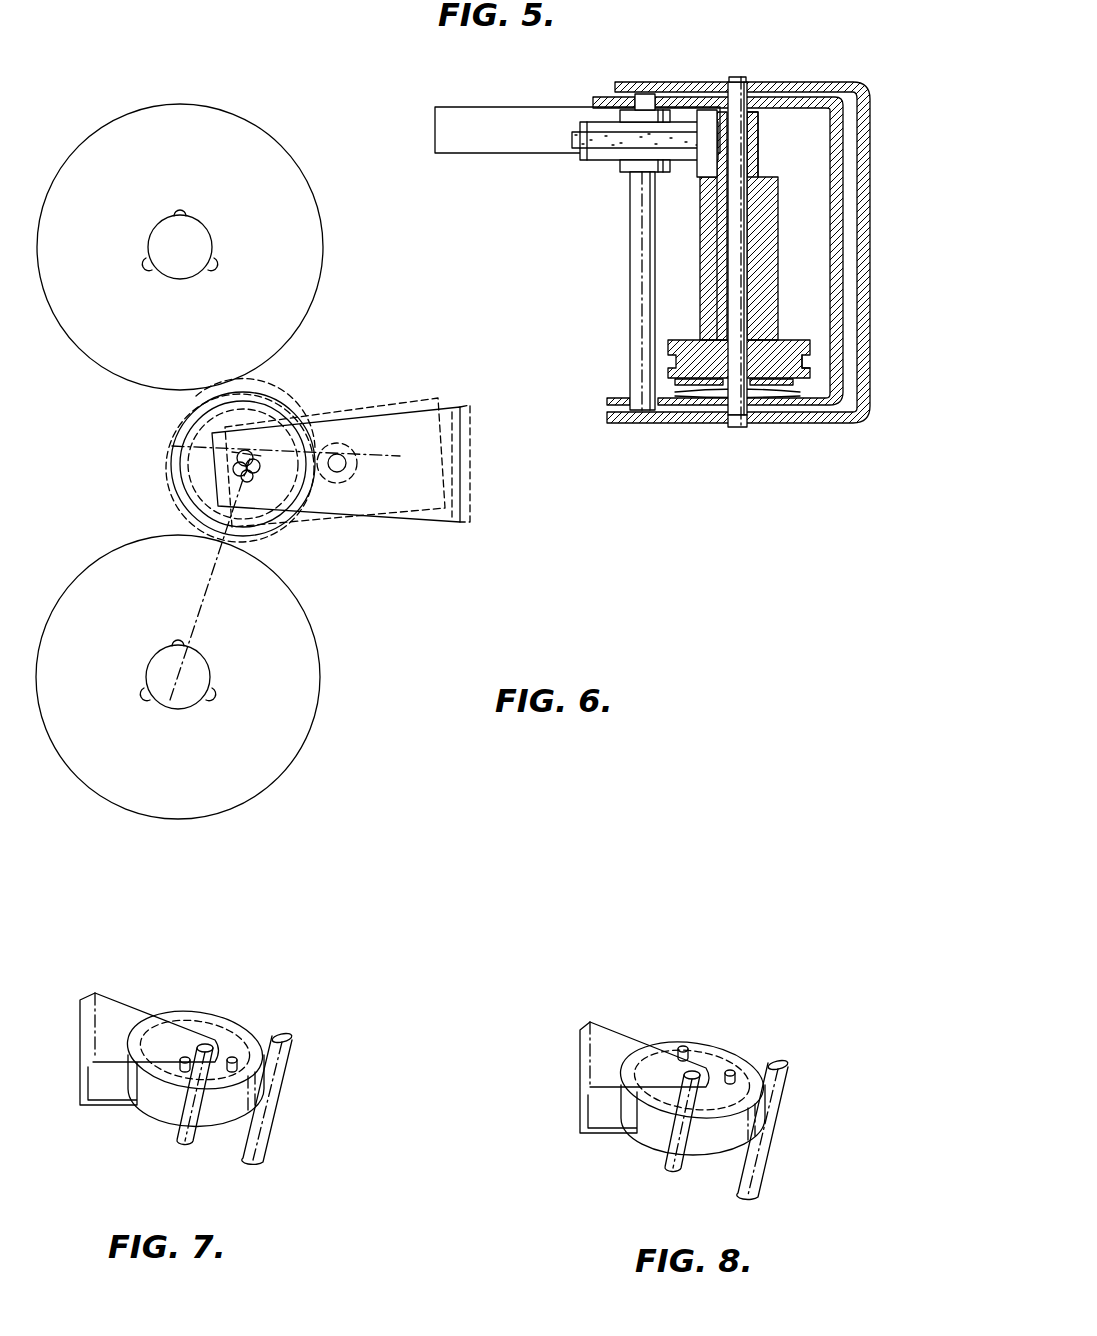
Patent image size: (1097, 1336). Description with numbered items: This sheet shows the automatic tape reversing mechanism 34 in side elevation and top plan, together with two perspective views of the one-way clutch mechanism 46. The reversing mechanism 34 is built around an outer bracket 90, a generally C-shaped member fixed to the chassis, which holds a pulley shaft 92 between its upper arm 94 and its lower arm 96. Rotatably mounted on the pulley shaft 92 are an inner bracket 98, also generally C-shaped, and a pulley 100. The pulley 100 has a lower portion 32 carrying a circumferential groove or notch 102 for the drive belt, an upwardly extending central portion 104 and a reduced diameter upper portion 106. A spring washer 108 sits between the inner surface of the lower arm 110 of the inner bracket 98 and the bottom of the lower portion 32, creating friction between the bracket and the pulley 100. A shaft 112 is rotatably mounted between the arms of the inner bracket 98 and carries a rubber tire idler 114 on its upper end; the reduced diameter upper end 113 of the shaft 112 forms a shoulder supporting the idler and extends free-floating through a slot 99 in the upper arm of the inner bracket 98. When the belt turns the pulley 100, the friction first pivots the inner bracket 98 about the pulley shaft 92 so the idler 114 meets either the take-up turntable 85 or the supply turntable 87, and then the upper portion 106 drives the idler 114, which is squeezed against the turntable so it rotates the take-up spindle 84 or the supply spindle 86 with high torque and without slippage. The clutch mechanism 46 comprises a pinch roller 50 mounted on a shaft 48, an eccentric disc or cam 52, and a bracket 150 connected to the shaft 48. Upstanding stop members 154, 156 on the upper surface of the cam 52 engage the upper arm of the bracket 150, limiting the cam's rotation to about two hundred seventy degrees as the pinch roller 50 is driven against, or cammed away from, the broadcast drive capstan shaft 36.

In FIG. 6, the lower portion of pulley 32 is at (790, 340).
In FIG. 5, the automatic reversing mechanism 34 is at (372, 366).
In FIG. 6, the automatic reversing mechanism 34 is at (535, 172).
In FIG. 7, the broadcast drive capstan shaft 36 is at (264, 1132).
In FIG. 8, the broadcast drive capstan shaft 36 is at (757, 1178).
In FIG. 7, the one-way clutch mechanism 46 is at (297, 1022).
In FIG. 8, the one-way clutch mechanism 46 is at (710, 1032).
In FIG. 7, the shaft 48 is at (180, 1142).
In FIG. 8, the shaft 48 is at (670, 1157).
In FIG. 7, the pinch roller 50 is at (222, 1117).
In FIG. 8, the pinch roller 50 is at (712, 1142).
In FIG. 7, the eccentric disc or cam 52 is at (176, 1010).
In FIG. 8, the eccentric disc or cam 52 is at (741, 1060).
In FIG. 5, the take-up spindle 84 is at (156, 672).
In FIG. 5, the take-up turntable 85 is at (292, 722).
In FIG. 5, the supply spindle 86 is at (196, 278).
In FIG. 5, the supply turntable 87 is at (302, 283).
In FIG. 6, the supply turntable 87 is at (478, 112).
In FIG. 6, the outer bracket 90 is at (626, 82).
In FIG. 5, the pulley shaft 92 is at (342, 455).
In FIG. 6, the pulley shaft 92 is at (741, 78).
In FIG. 5, the upper arm of outer bracket 94 is at (444, 405).
In FIG. 6, the upper arm of outer bracket 94 is at (678, 82).
In FIG. 6, the lower arm of outer bracket 96 is at (770, 424).
In FIG. 5, the inner bracket 98 is at (402, 518).
In FIG. 6, the inner bracket 98 is at (806, 100).
In FIG. 5, the slot 99 is at (262, 430).
In FIG. 6, the slot 99 is at (660, 100).
In FIG. 6, the pulley 100 is at (778, 268).
In FIG. 6, the circumferential groove or notch 102 is at (808, 362).
In FIG. 6, the central portion of pulley 104 is at (762, 212).
In FIG. 6, the upper portion of pulley 106 is at (756, 148).
In FIG. 6, the spring washer 108 is at (706, 396).
In FIG. 6, the lower arm of inner bracket 110 is at (672, 408).
In FIG. 6, the shaft 112 is at (636, 243).
In FIG. 5, the reduced diameter upper end of shaft 113 is at (215, 450).
In FIG. 6, the reduced diameter upper end of shaft 113 is at (641, 94).
In FIG. 5, the rubber tire idler 114 is at (265, 383).
In FIG. 6, the rubber tire idler 114 is at (598, 146).
In FIG. 7, the bracket 150 is at (105, 1005).
In FIG. 8, the bracket 150 is at (606, 1032).
In FIG. 7, the stop member 154 is at (180, 1070).
In FIG. 8, the stop member 154 is at (736, 1080).
In FIG. 7, the stop member 156 is at (240, 1066).
In FIG. 8, the stop member 156 is at (683, 1047).